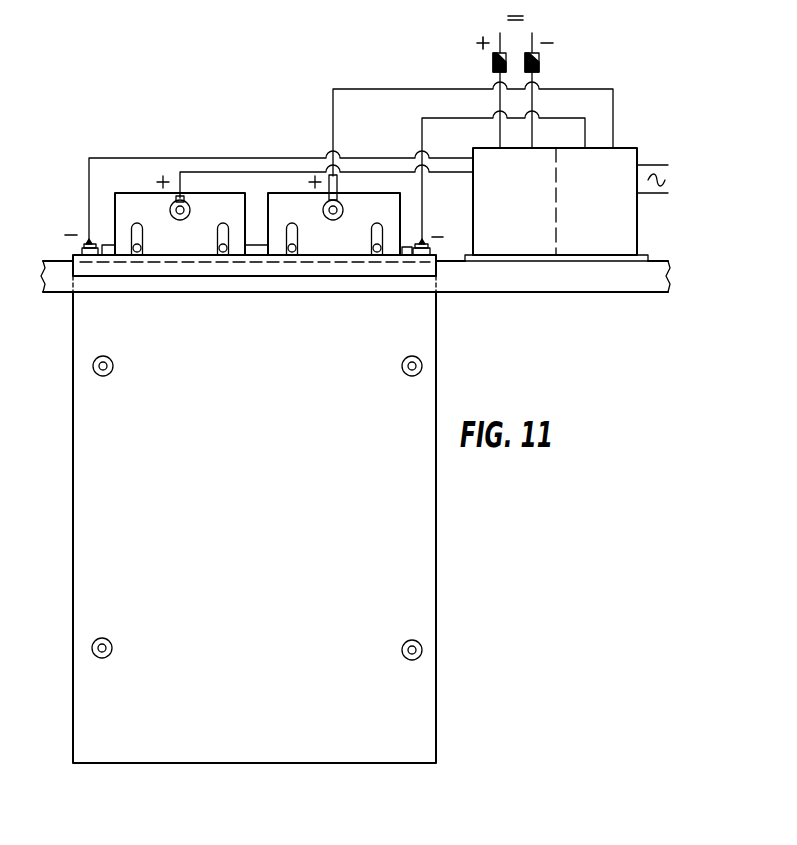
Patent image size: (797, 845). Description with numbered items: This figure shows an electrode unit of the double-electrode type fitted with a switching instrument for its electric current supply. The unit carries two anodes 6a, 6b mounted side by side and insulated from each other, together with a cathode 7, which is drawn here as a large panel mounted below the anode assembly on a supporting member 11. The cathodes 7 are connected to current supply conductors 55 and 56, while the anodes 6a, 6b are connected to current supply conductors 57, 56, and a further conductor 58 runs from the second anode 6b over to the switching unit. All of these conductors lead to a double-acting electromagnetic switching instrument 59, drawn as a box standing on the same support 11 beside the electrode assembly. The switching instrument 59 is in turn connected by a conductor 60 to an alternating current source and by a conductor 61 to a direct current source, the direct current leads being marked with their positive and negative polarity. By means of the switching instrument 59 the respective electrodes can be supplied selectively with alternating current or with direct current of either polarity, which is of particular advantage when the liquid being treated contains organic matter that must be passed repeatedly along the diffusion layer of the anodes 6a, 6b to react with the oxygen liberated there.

The anode 6a is at (147, 203).
The anode 6b is at (366, 206).
The cathode 7 is at (420, 536).
The support rail 11 is at (472, 280).
The current supply conductor 55 is at (185, 157).
The current supply conductor 56 is at (443, 117).
The current supply conductor 57 is at (237, 172).
The connecting wire 58 is at (333, 123).
The double-acting electromagnetic switching instrument 59 is at (543, 243).
The conductor 60 is at (640, 168).
The conductor 61 is at (533, 135).